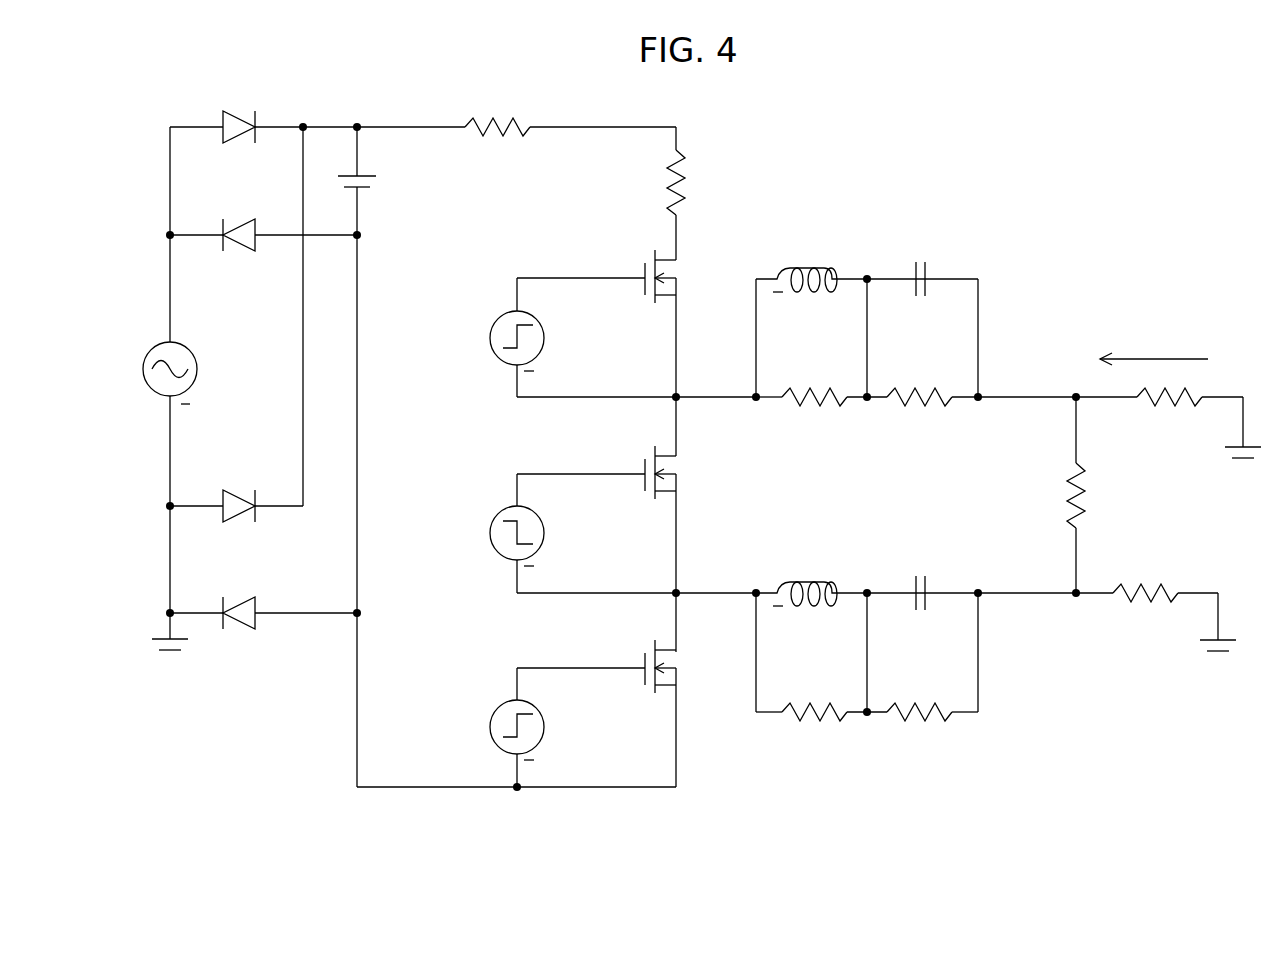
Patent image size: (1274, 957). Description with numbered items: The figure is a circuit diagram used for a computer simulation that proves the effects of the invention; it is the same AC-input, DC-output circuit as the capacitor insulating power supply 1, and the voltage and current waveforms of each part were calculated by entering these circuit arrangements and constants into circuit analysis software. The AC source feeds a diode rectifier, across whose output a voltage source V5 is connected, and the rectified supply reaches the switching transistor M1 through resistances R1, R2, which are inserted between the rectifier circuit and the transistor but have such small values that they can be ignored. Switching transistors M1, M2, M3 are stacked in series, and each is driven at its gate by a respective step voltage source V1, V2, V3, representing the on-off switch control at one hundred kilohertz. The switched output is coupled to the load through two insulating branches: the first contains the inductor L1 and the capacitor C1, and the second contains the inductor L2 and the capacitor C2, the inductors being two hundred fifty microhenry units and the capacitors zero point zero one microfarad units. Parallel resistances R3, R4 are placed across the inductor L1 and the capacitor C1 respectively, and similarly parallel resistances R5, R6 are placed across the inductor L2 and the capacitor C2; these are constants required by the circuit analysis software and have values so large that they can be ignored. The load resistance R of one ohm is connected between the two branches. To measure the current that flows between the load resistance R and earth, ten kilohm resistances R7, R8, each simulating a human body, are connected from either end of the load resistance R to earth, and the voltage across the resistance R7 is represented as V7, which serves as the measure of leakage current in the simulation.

The capacitor insulating power supply 1 is at (197, 369).
The resistance R1 is at (497, 152).
The resistance R2 is at (708, 182).
The parallel resistance R3 is at (814, 426).
The parallel resistance R4 is at (919, 426).
The parallel resistance R5 is at (814, 741).
The parallel resistance R6 is at (919, 741).
The resistance simulating human body R7 is at (1169, 426).
The resistance simulating human body R8 is at (1145, 621).
The load resistance R is at (1098, 495).
The voltage source V1 is at (498, 333).
The voltage source V2 is at (498, 528).
The voltage source V3 is at (498, 722).
The voltage source V5 is at (375, 182).
The voltage of resistance R7 V7 is at (1154, 348).
The switching transistor M1 is at (681, 276).
The switching transistor M2 is at (681, 472).
The switching transistor M3 is at (681, 666).
The inductor L1 is at (807, 284).
The inductor L2 is at (807, 599).
The capacitor C1 is at (923, 283).
The capacitor C2 is at (923, 598).